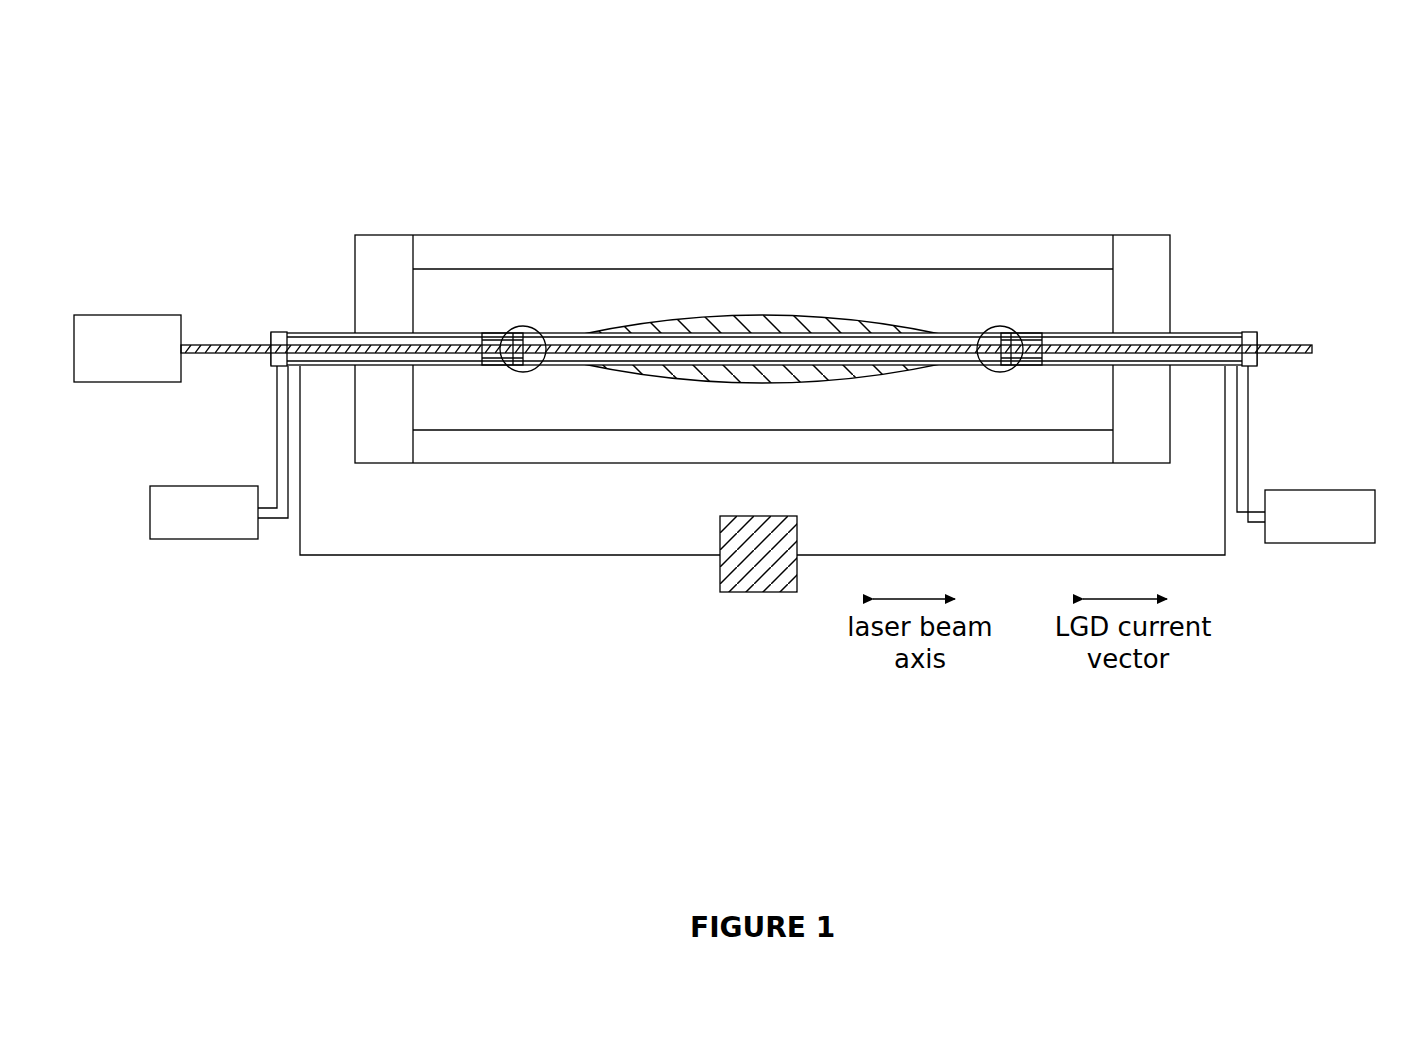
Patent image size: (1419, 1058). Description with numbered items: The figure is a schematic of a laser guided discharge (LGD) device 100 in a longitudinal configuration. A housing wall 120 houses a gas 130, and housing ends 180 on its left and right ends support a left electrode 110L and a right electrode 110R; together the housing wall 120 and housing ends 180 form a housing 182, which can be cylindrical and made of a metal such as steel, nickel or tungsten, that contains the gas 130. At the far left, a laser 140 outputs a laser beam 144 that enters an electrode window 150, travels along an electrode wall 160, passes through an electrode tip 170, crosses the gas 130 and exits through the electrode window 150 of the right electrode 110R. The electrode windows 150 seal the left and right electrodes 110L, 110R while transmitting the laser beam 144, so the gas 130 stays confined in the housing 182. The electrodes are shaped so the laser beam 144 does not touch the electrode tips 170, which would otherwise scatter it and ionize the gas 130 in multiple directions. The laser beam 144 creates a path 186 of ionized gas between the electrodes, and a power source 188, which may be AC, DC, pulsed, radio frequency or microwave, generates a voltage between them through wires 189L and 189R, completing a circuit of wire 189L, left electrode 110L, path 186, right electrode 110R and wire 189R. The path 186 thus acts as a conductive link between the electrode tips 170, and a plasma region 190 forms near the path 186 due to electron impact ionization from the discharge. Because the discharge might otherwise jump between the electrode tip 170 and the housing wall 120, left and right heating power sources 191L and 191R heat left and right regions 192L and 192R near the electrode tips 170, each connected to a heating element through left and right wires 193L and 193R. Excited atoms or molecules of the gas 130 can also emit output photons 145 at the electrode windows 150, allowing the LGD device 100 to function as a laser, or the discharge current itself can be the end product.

The laser guided discharge device 100 is at (902, 165).
The left electrode 110L is at (256, 375).
The right electrode 110R is at (1195, 320).
The housing wall 120 is at (440, 252).
The gas 130 is at (640, 292).
The laser 140 is at (128, 313).
The laser beam 144 is at (195, 345).
The output photons 145 is at (232, 260).
The electrode window 150 is at (280, 332).
The electrode wall 160 is at (473, 330).
The electrode tip 170 is at (502, 335).
The housing end 180 is at (377, 292).
The housing 182 is at (424, 118).
The path of ionized gas 186 is at (800, 345).
The power source 188 is at (722, 520).
The wire 189L is at (478, 553).
The wire 189R is at (882, 553).
The plasma region 190 is at (745, 330).
The left heating power source 191L is at (205, 540).
The right heating power source 191R is at (1318, 543).
The left region 192L is at (523, 392).
The right region 192R is at (1005, 392).
The left wires 193L is at (272, 452).
The right wires 193R is at (1246, 452).